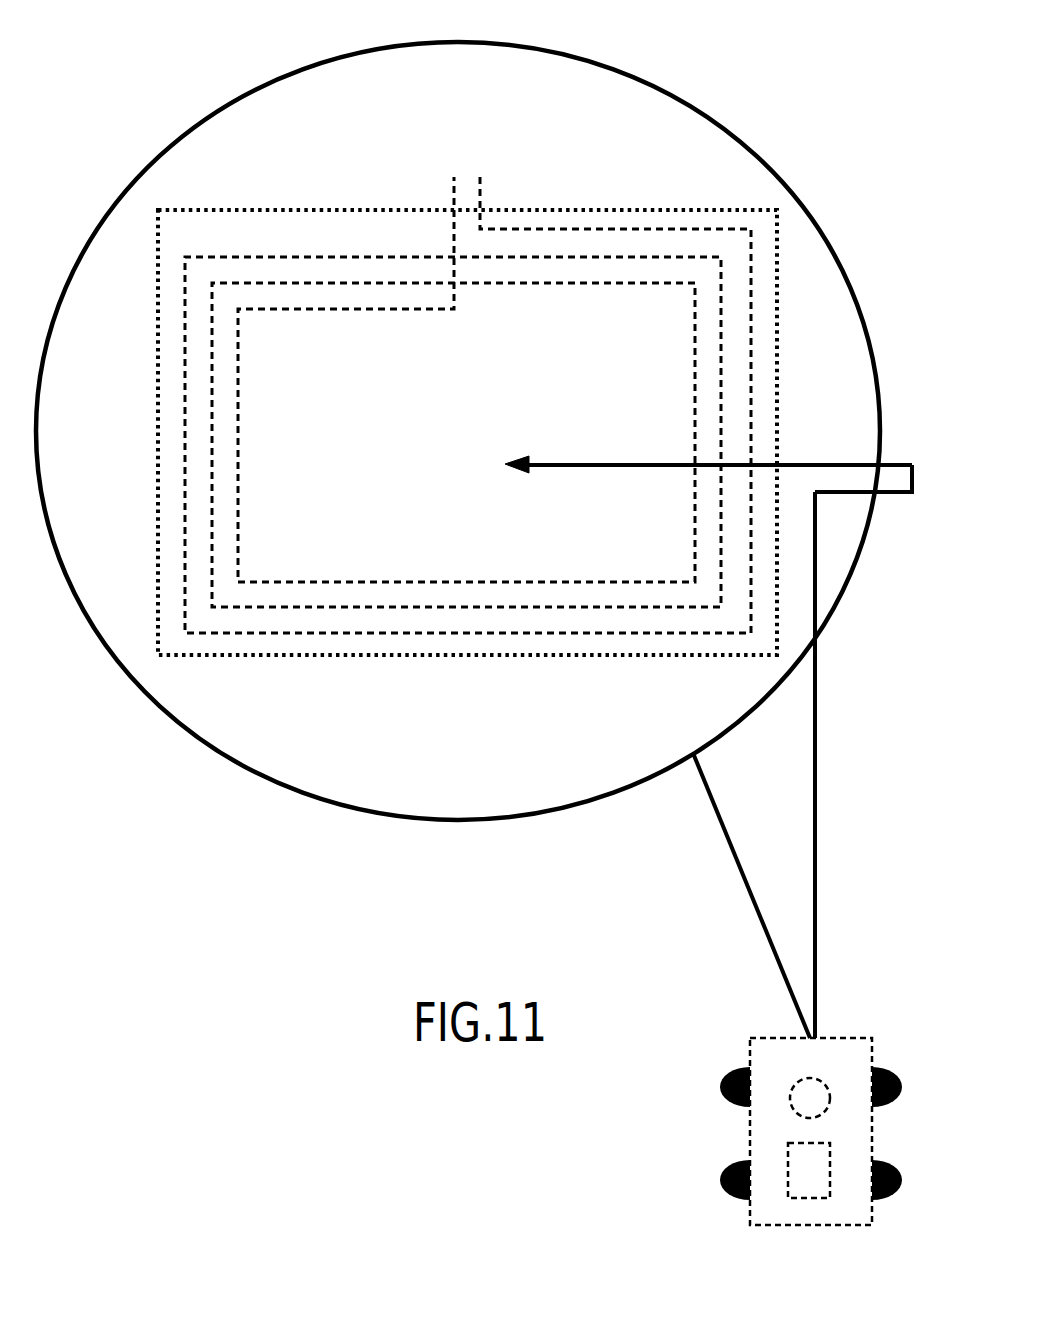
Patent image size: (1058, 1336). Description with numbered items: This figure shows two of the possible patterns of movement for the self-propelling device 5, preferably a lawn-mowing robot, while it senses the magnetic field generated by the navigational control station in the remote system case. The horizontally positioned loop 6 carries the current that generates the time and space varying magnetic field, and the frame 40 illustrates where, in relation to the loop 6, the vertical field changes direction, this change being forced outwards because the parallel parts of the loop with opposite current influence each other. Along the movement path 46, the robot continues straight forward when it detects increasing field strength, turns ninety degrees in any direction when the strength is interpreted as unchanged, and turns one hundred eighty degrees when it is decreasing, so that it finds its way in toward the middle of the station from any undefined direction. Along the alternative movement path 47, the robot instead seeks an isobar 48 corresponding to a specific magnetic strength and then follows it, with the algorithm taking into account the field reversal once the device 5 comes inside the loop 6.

The isobar 48 is at (873, 363).
The frame 40 is at (778, 251).
The loop 6 is at (752, 317).
The movement path 46 is at (816, 753).
The alternative movement path 47 is at (740, 868).
The self-propelling device 5 is at (833, 1060).